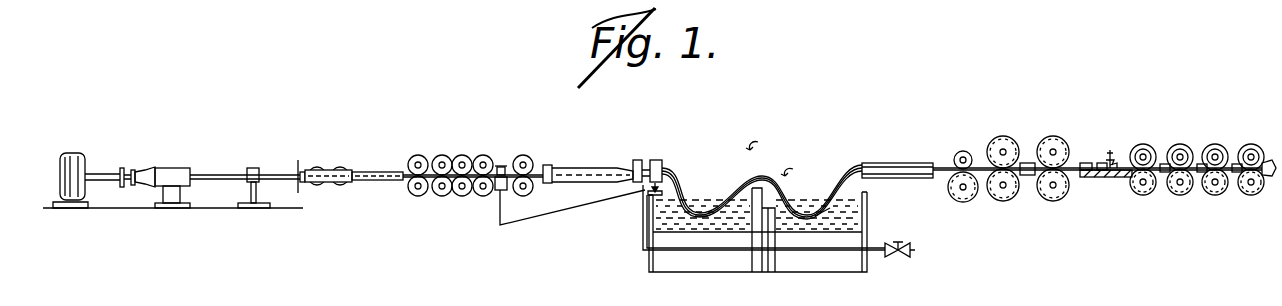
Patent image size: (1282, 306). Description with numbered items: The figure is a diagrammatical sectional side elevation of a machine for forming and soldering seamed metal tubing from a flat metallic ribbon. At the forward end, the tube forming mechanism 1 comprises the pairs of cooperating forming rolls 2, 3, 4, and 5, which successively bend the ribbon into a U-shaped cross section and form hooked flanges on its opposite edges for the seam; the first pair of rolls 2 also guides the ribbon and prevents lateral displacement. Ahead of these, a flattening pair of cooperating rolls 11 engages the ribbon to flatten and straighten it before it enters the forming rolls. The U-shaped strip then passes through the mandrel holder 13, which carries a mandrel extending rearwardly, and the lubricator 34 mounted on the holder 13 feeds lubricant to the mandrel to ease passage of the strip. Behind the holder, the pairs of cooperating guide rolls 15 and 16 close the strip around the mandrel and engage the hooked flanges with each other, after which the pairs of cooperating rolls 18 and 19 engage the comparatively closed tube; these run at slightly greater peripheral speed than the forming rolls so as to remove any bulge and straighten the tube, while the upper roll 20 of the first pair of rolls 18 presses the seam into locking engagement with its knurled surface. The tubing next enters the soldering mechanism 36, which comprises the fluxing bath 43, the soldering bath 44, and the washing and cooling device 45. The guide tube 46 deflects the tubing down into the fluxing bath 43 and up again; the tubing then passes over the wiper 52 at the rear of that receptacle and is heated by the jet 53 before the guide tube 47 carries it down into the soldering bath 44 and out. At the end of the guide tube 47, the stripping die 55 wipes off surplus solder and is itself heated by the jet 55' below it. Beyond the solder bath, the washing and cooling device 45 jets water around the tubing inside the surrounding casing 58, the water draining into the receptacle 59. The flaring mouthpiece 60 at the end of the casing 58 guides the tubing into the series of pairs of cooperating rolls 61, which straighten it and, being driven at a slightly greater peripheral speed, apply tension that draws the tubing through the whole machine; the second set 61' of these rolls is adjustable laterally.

The tube forming mechanism 1 is at (987, 217).
The pair of cooperating forming rolls 2 is at (1253, 196).
The pair of cooperating forming rolls 3 is at (1218, 196).
The pair of cooperating forming rolls 4 is at (1181, 196).
The pair of cooperating forming rolls 5 is at (1146, 196).
The flattening pair of cooperating rolls 11 is at (1270, 160).
The mandrel holder 13 is at (1118, 178).
The pair of cooperating guide rolls 15 is at (1110, 152).
The pair of cooperating guide rolls 16 is at (1083, 163).
The pair of cooperating rolls 18 is at (1050, 204).
The pair of cooperating rolls 19 is at (1011, 205).
The upper roll 20 is at (1051, 136).
The lubricator 34 is at (1114, 162).
The soldering mechanism 36 is at (797, 168).
The fluxing bath 43 is at (823, 183).
The soldering bath 44 is at (703, 188).
The washing and cooling device 45 is at (583, 167).
The guide tube 46 is at (867, 196).
The guide tube 47 is at (672, 170).
The wiper 52 is at (765, 177).
The jet 53 is at (792, 192).
The stripping die 55 is at (656, 156).
The jet 55' is at (632, 221).
The surrounding casing 58 is at (607, 167).
The receptacle 59 is at (577, 212).
The flaring mouthpiece 60 is at (548, 163).
The series of pairs of cooperating rolls 61 is at (486, 202).
The second set of rolls 61' is at (513, 138).